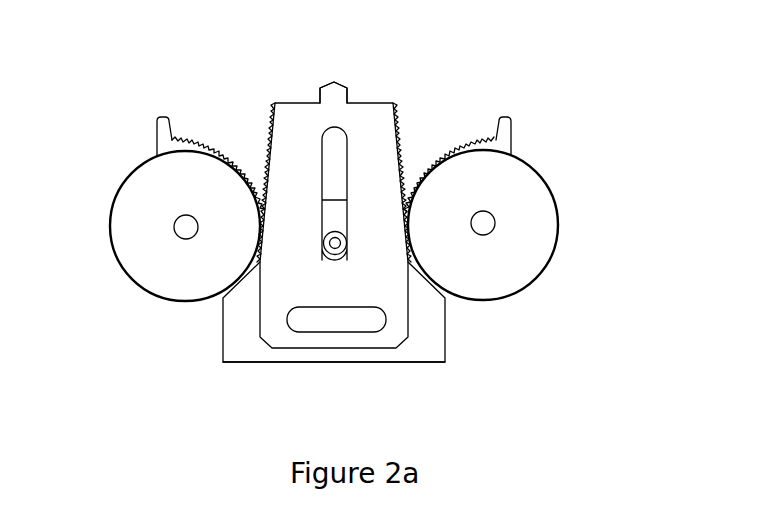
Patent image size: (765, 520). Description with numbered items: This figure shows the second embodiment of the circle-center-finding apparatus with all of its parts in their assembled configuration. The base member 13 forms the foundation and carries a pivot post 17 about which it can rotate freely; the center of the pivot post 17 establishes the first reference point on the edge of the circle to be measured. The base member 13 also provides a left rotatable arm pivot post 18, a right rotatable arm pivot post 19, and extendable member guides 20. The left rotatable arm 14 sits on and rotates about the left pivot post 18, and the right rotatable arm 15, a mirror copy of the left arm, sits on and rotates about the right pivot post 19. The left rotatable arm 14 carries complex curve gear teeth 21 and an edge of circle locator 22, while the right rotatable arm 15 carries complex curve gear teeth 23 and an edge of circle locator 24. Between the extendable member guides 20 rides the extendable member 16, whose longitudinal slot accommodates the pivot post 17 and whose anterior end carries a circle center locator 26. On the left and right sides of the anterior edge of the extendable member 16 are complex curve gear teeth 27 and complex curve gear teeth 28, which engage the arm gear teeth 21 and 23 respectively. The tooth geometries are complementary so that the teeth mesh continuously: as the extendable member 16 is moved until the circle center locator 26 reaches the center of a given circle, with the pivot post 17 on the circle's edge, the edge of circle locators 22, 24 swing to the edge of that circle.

The base member 13 is at (461, 342).
The left rotatable arm 14 is at (117, 286).
The right rotatable arm 15 is at (540, 289).
The extendable member 16 is at (250, 318).
The pivot post 17 is at (364, 250).
The left rotatable arm pivot post 18 is at (160, 229).
The right rotatable arm pivot post 19 is at (511, 221).
The extendable member guides 20 is at (415, 376).
The complex curve gear teeth 21 is at (194, 131).
The edge of circle locator 22 is at (143, 117).
The complex curve gear teeth 23 is at (476, 116).
The edge of circle locator 24 is at (509, 96).
The circle center locator 26 is at (318, 76).
The complex curve gear teeth 27 is at (261, 120).
The complex curve gear teeth 28 is at (408, 121).